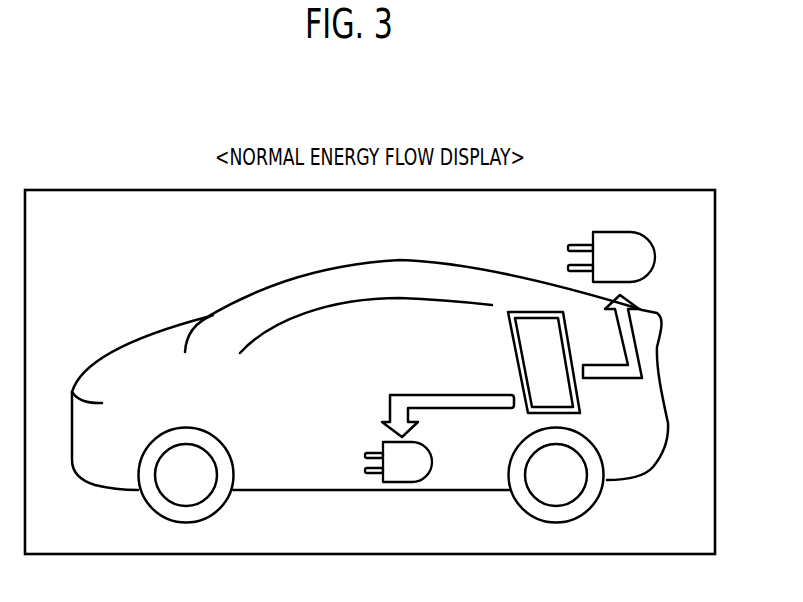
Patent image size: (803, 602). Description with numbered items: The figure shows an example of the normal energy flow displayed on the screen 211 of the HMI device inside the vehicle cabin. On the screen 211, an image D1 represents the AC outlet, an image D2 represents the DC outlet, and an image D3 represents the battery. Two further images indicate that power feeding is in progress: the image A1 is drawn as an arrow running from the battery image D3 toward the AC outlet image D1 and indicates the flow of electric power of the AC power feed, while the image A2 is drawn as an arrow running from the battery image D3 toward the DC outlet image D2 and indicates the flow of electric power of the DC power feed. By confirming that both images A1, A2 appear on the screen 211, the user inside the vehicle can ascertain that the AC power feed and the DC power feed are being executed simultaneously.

The screen 211 is at (637, 189).
The image representing the AC outlet D1 is at (433, 462).
The image representing the DC outlet D2 is at (622, 232).
The image representing the battery D3 is at (523, 333).
The image representing that the AC power feed is being executed A1 is at (420, 394).
The image representing that the DC power feed is being executed A2 is at (627, 381).